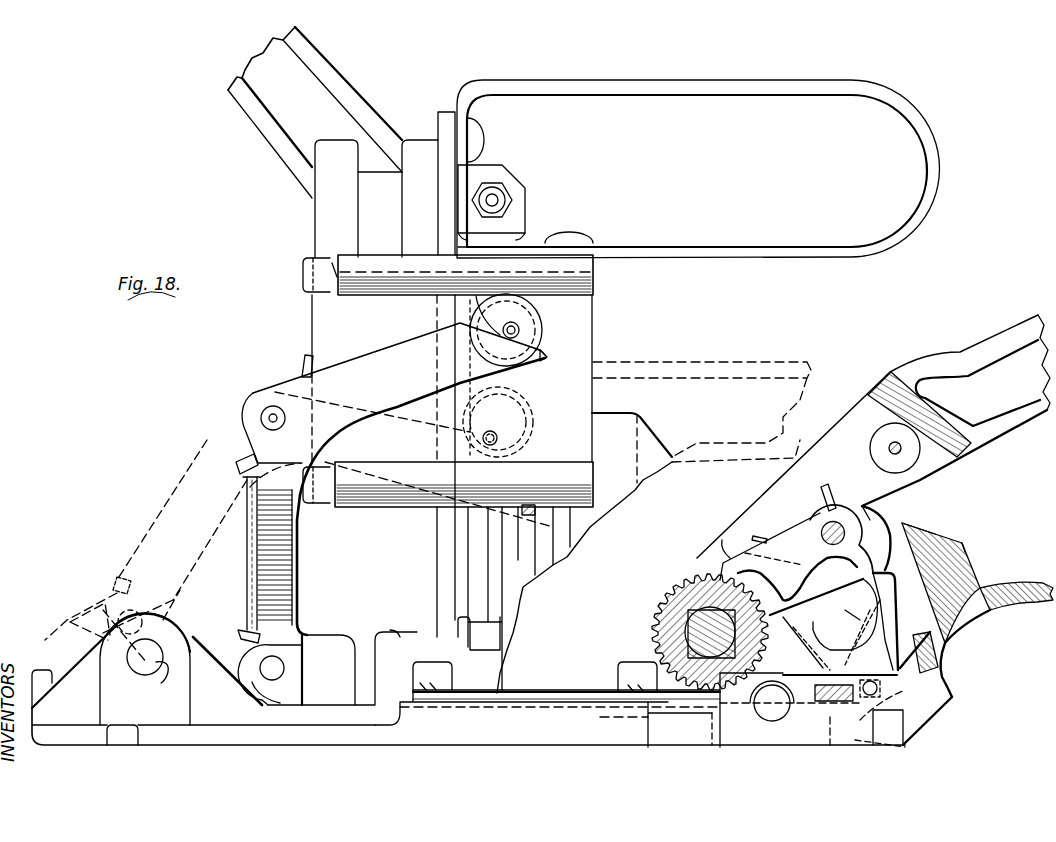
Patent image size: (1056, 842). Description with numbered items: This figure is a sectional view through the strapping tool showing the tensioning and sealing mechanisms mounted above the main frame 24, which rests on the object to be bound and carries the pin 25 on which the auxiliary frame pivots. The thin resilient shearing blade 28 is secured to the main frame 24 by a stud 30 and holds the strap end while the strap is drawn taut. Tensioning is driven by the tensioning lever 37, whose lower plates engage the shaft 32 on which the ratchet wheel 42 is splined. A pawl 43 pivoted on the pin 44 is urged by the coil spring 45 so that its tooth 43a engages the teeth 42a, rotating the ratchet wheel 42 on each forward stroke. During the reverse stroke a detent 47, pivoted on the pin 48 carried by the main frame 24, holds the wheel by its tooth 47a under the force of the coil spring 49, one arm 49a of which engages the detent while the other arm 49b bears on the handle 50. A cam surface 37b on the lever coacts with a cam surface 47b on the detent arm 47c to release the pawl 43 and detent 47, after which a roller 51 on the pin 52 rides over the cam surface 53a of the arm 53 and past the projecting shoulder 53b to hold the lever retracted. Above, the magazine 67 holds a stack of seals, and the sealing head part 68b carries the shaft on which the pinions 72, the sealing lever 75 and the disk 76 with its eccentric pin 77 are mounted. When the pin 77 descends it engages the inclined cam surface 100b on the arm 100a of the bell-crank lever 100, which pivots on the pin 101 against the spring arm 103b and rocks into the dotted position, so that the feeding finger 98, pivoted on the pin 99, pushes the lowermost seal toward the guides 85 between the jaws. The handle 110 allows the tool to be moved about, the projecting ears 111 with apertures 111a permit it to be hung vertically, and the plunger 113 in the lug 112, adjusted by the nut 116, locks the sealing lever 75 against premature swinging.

The sealing lever 75 is at (318, 95).
The handle 110 is at (768, 85).
The plunger 113 is at (493, 200).
The lug 112 is at (527, 190).
The nut 116 is at (506, 208).
The magazine 67 is at (366, 226).
The pinions 72 is at (448, 275).
The disk 76 is at (512, 297).
The pin 77 is at (537, 323).
The arm 100a is at (372, 360).
The inclined cam surface 100b is at (545, 355).
The sealing head part 68b is at (532, 375).
The pin 101 is at (273, 418).
The spring arm 103b is at (238, 460).
The bell-crank lever 100 is at (250, 577).
The pin 52 is at (895, 448).
The tensioning lever 37 is at (1000, 415).
The roller 51 is at (946, 462).
The coil spring 45 is at (830, 484).
The pin 44 is at (838, 522).
The tooth 43a is at (730, 560).
The pawl 43 is at (795, 530).
The cam surface 37b is at (882, 522).
The cam surface 53a is at (937, 523).
The projecting shoulder 53b is at (963, 543).
The arm 53 is at (952, 572).
The ratchet wheel 42 is at (688, 575).
The teeth 42a is at (690, 610).
The shaft 32 is at (660, 627).
The tooth 47a is at (792, 592).
The cam surface 47b is at (848, 611).
The arm 47c is at (882, 607).
The detent 47 is at (817, 616).
The spring arm 49a is at (891, 636).
The handle 50 is at (1040, 602).
The spring arm 49b is at (935, 663).
The pin 48 is at (897, 692).
The projecting ears 111 is at (111, 662).
The apertures 111a is at (154, 670).
The pin 99 is at (275, 667).
The guides 85 is at (488, 667).
The shearing blade 28 is at (540, 697).
The stud 30 is at (626, 670).
The feeding finger 98 is at (258, 705).
The main frame 24 is at (467, 724).
The pin 25 is at (772, 708).
The coil spring 49 is at (890, 732).